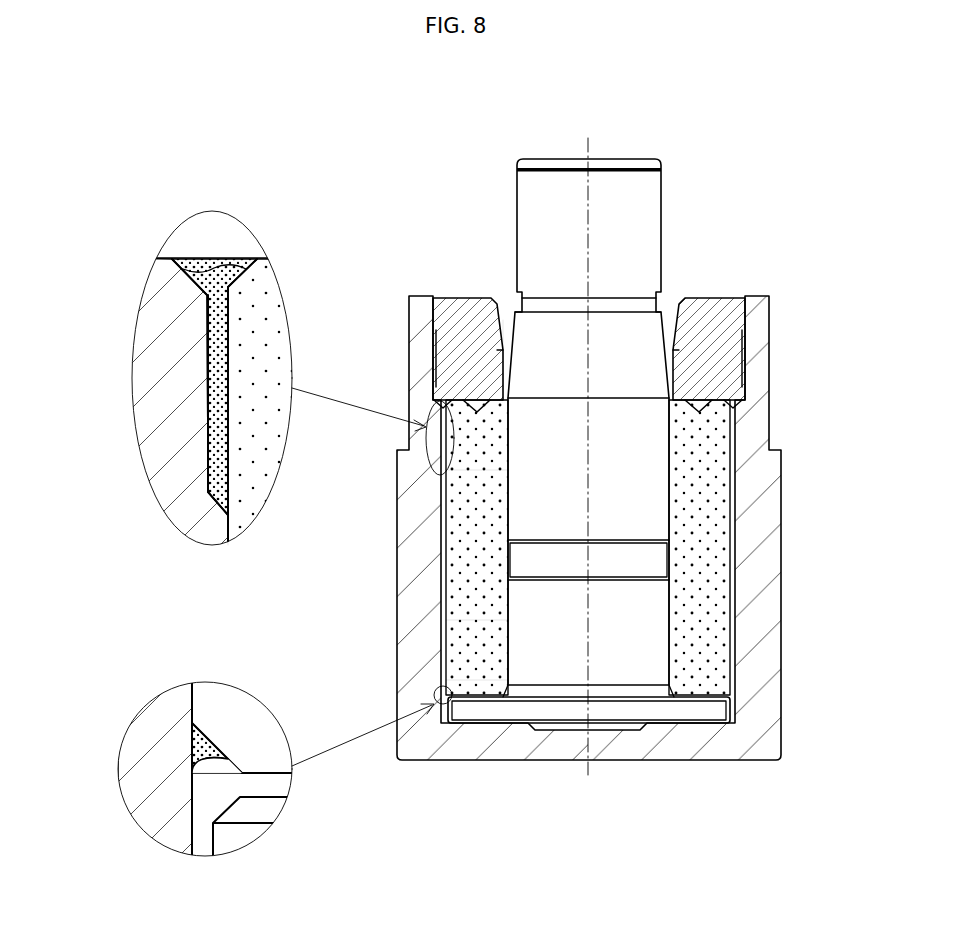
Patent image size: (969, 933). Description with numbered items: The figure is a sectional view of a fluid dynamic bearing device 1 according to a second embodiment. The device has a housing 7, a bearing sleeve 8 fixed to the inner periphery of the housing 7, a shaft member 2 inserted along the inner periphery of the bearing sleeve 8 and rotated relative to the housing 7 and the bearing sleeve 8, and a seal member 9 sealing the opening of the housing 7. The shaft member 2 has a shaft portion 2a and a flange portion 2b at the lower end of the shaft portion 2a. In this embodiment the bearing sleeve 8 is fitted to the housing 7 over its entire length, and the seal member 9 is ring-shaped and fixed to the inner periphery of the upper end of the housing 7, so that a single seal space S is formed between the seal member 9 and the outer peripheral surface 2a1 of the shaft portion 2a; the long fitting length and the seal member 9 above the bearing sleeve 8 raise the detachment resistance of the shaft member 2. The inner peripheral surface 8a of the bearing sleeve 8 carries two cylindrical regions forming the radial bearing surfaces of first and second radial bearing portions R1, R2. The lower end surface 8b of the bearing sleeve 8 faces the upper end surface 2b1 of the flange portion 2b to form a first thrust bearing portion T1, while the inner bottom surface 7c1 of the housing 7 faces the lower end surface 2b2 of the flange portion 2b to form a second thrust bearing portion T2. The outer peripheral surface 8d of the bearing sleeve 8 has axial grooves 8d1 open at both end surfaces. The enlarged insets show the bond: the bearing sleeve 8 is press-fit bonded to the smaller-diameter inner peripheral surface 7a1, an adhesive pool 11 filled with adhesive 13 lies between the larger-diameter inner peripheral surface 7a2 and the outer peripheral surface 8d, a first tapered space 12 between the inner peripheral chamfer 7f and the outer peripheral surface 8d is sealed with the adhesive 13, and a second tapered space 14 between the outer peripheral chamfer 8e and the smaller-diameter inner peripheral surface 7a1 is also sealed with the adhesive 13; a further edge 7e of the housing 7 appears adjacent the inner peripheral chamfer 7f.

The fluid dynamic bearing device 1 is at (531, 516).
The shaft member 2 is at (668, 226).
The shaft portion 2a is at (624, 182).
The outer peripheral surface 2a1 is at (668, 527).
The flange portion 2b is at (570, 712).
The upper end surface 2b1 is at (676, 676).
The lower end surface 2b2 is at (512, 726).
The housing 7 is at (404, 314).
The smaller-diameter inner peripheral surface 7a1 is at (230, 522).
The larger-diameter inner peripheral surface 7a2 is at (208, 435).
The inner bottom surface 7c1 is at (636, 730).
The housing chamfer 7e is at (166, 257).
The inner peripheral chamfer 7f is at (186, 256).
The bearing sleeve 8 is at (805, 432).
The inner peripheral surface 8a is at (737, 469).
The lower end surface 8b is at (463, 700).
The outer peripheral surface 8d is at (447, 560).
The axial groove 8d1 is at (724, 594).
The outer peripheral chamfer 8e is at (196, 781).
The seal member 9 is at (726, 354).
The adhesive pool 11 is at (210, 348).
The first tapered space 12 is at (206, 281).
The adhesive 13 is at (223, 463).
The second tapered space 14 is at (207, 730).
The first radial bearing portion R1 is at (500, 483).
The second radial bearing portion R2 is at (503, 630).
The seal space S is at (507, 345).
The first thrust bearing portion T1 is at (468, 690).
The second thrust bearing portion T2 is at (688, 730).